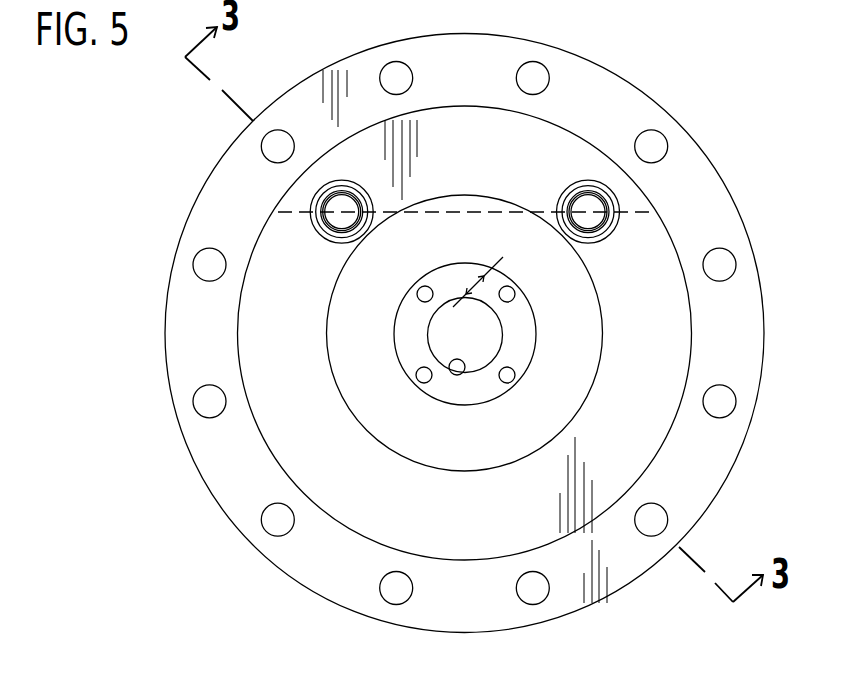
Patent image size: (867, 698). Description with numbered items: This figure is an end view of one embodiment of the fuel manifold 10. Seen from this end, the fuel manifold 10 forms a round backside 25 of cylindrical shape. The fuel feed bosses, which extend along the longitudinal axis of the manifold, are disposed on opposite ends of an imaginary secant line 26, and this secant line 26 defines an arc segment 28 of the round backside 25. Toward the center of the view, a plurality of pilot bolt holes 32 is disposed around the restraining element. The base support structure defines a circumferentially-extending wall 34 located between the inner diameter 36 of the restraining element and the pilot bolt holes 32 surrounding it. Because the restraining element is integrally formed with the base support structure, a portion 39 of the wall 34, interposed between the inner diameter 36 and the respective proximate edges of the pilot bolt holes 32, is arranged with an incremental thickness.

The fuel manifold 10 is at (690, 82).
The round backside 25 is at (560, 365).
The imaginary secant line 26 is at (463, 213).
The arc segment 28 is at (446, 108).
The pilot bolt holes 32 is at (417, 369).
The circumferentially-extending wall 34 is at (517, 335).
The inner diameter 36 is at (449, 368).
The portion of the wall 39 is at (481, 282).